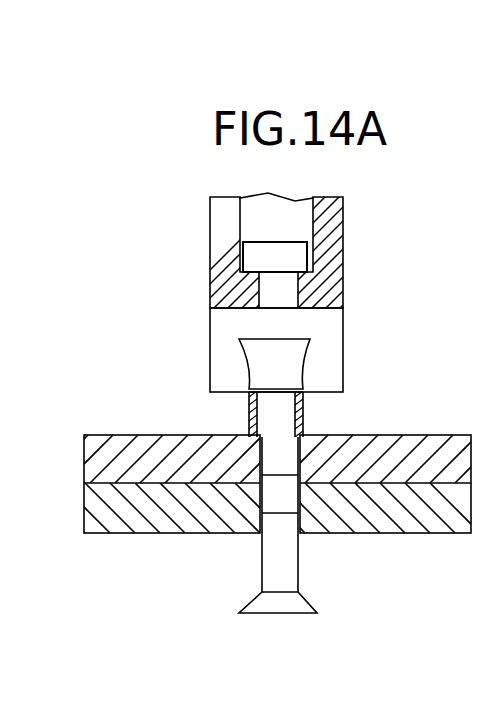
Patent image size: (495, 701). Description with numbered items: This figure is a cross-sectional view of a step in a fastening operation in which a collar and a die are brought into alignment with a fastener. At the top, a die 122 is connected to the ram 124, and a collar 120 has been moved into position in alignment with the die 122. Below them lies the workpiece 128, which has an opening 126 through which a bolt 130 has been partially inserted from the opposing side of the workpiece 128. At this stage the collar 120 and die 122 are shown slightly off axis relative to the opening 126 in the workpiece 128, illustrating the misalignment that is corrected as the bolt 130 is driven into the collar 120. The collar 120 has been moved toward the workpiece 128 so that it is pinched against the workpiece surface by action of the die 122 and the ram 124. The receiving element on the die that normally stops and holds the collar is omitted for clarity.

The collar 120 is at (247, 418).
The die 122 is at (210, 357).
The ram 124 is at (210, 260).
The opening 126 is at (332, 437).
The workpiece 128 is at (425, 435).
The bolt 130 is at (262, 577).